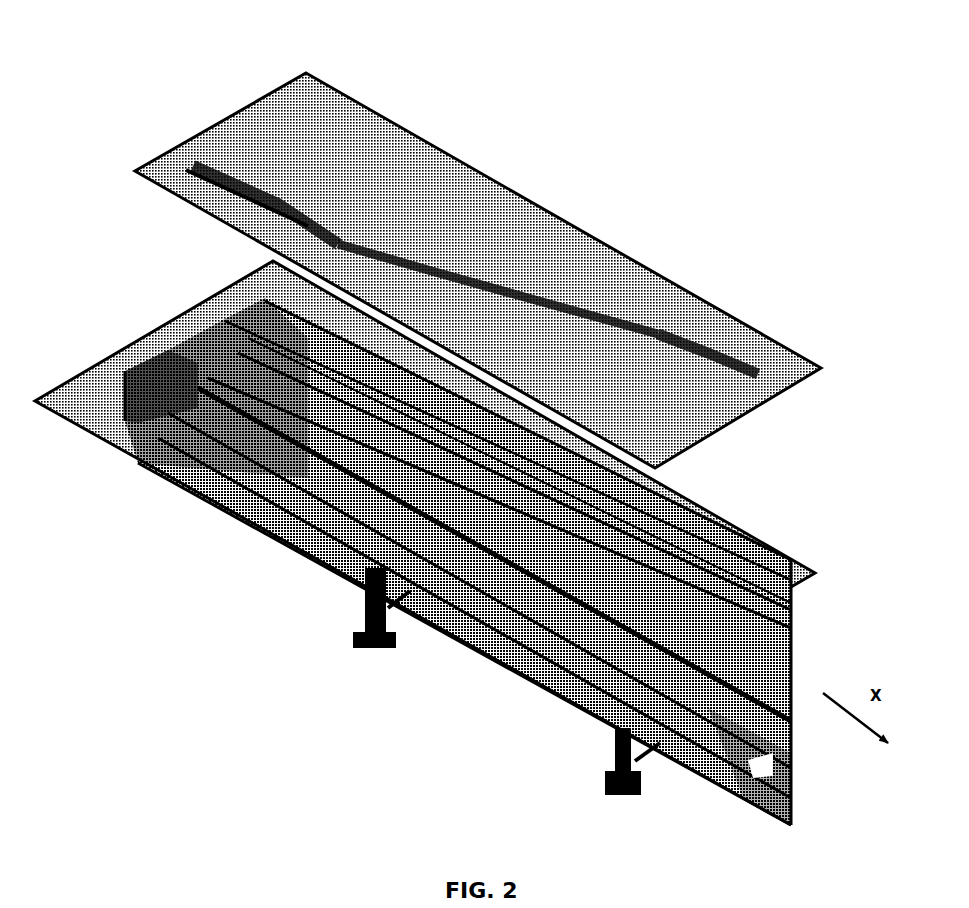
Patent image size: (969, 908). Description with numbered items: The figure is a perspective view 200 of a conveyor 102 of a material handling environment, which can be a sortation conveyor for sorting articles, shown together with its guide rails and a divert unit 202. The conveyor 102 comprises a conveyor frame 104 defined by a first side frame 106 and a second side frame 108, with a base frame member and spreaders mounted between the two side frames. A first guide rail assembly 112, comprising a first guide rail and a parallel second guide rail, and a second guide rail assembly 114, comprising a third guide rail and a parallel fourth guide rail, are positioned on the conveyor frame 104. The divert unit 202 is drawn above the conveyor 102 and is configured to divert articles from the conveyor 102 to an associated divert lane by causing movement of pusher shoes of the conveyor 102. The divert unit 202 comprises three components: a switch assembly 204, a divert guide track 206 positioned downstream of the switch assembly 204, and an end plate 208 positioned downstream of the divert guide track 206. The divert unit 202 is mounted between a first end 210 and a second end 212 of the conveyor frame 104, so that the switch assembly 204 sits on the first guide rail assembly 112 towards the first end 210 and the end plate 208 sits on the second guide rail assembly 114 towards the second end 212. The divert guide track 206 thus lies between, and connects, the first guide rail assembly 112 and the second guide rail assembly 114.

The perspective view 200 is at (85, 66).
The conveyor 102 is at (78, 428).
The conveyor frame 104 is at (313, 540).
The first side frame 106 is at (735, 765).
The second side frame 108 is at (787, 620).
The first guide rail assembly 112 is at (490, 653).
The second guide rail assembly 114 is at (767, 527).
The divert unit 202 is at (440, 165).
The switch assembly 204 is at (247, 215).
The divert guide track 206 is at (470, 268).
The end plate 208 is at (715, 335).
The first end 210 is at (147, 365).
The second end 212 is at (787, 602).